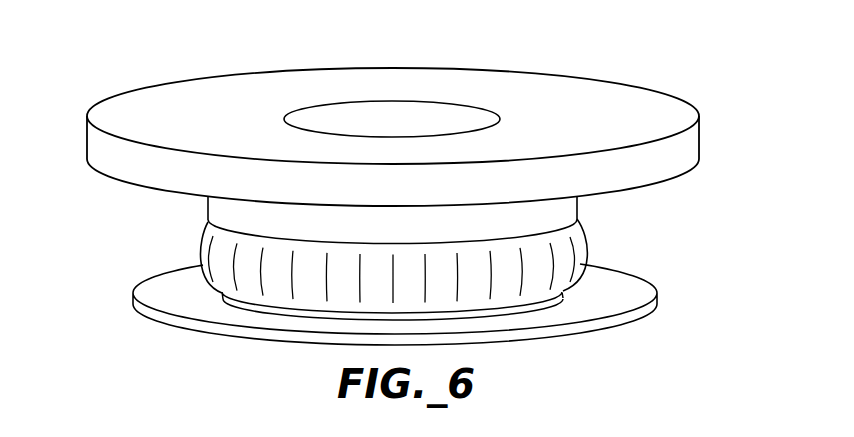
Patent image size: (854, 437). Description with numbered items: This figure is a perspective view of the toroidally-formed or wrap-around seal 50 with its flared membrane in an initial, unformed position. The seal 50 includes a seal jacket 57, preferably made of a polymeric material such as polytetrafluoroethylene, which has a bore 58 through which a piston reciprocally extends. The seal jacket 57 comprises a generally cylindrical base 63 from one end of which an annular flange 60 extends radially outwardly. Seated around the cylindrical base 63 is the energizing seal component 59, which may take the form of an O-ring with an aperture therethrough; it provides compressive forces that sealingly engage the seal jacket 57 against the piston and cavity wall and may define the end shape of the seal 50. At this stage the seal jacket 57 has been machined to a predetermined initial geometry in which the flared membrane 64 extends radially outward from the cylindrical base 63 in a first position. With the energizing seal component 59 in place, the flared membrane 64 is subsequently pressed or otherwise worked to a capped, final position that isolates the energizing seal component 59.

The seal 50 is at (391, 177).
The seal jacket 57 is at (371, 124).
The bore 58 is at (405, 113).
The annular flange 60 is at (555, 100).
The cylindrical base 63 is at (209, 200).
The energizing seal component 59 is at (587, 250).
The flared membrane 64 is at (607, 297).